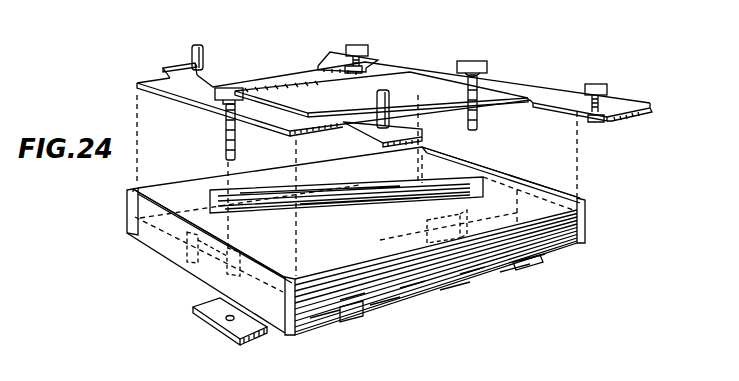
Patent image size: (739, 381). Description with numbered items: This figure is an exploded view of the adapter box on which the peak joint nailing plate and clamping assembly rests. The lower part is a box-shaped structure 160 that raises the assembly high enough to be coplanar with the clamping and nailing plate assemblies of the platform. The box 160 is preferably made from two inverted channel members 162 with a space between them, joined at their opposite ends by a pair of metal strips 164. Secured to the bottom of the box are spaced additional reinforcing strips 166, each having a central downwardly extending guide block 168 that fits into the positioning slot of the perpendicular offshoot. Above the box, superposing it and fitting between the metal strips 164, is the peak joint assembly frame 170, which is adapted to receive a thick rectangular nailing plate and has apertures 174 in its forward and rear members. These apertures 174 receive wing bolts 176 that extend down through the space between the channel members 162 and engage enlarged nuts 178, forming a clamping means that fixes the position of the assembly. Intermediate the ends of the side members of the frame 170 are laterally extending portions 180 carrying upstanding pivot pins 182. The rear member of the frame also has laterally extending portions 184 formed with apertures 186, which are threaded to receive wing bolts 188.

The box-shaped structure 160 is at (414, 284).
The inverted channel members 162 is at (290, 186).
The metal strips 164 is at (160, 237).
The reinforcing strips 166 is at (356, 324).
The guide blocks 168 is at (210, 287).
The peak joint assembly frame 170 is at (522, 80).
The apertures 174 is at (222, 100).
The wing bolts 176 is at (226, 150).
The enlarged nuts 178 is at (222, 327).
The laterally extending portions 180 is at (214, 79).
The pivot pins 182 is at (197, 44).
The laterally extending portions 184 is at (336, 52).
The apertures 186 is at (355, 68).
The wing bolts 188 is at (356, 44).